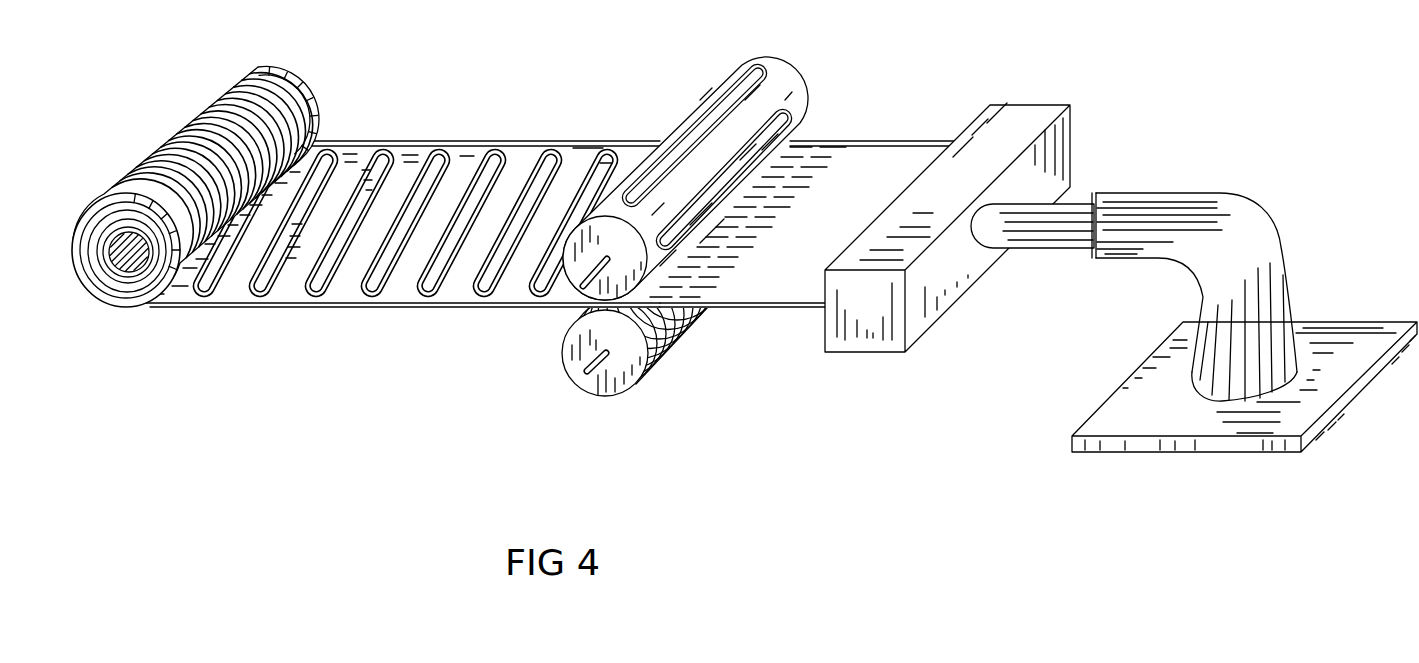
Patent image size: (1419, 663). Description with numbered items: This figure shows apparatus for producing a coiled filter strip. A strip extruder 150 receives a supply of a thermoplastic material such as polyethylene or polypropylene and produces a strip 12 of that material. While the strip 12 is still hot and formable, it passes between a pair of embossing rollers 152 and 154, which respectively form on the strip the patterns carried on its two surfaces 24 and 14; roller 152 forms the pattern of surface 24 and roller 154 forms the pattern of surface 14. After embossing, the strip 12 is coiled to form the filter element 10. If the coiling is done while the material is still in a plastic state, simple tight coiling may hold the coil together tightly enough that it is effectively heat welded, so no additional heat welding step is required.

The filter element 10 is at (293, 75).
The strip 12 is at (342, 307).
The surface of strip 14 is at (880, 150).
The surface of strip 24 is at (778, 307).
The strip extruder 150 is at (1077, 160).
The embossing roller 152 is at (800, 65).
The embossing roller 154 is at (640, 379).